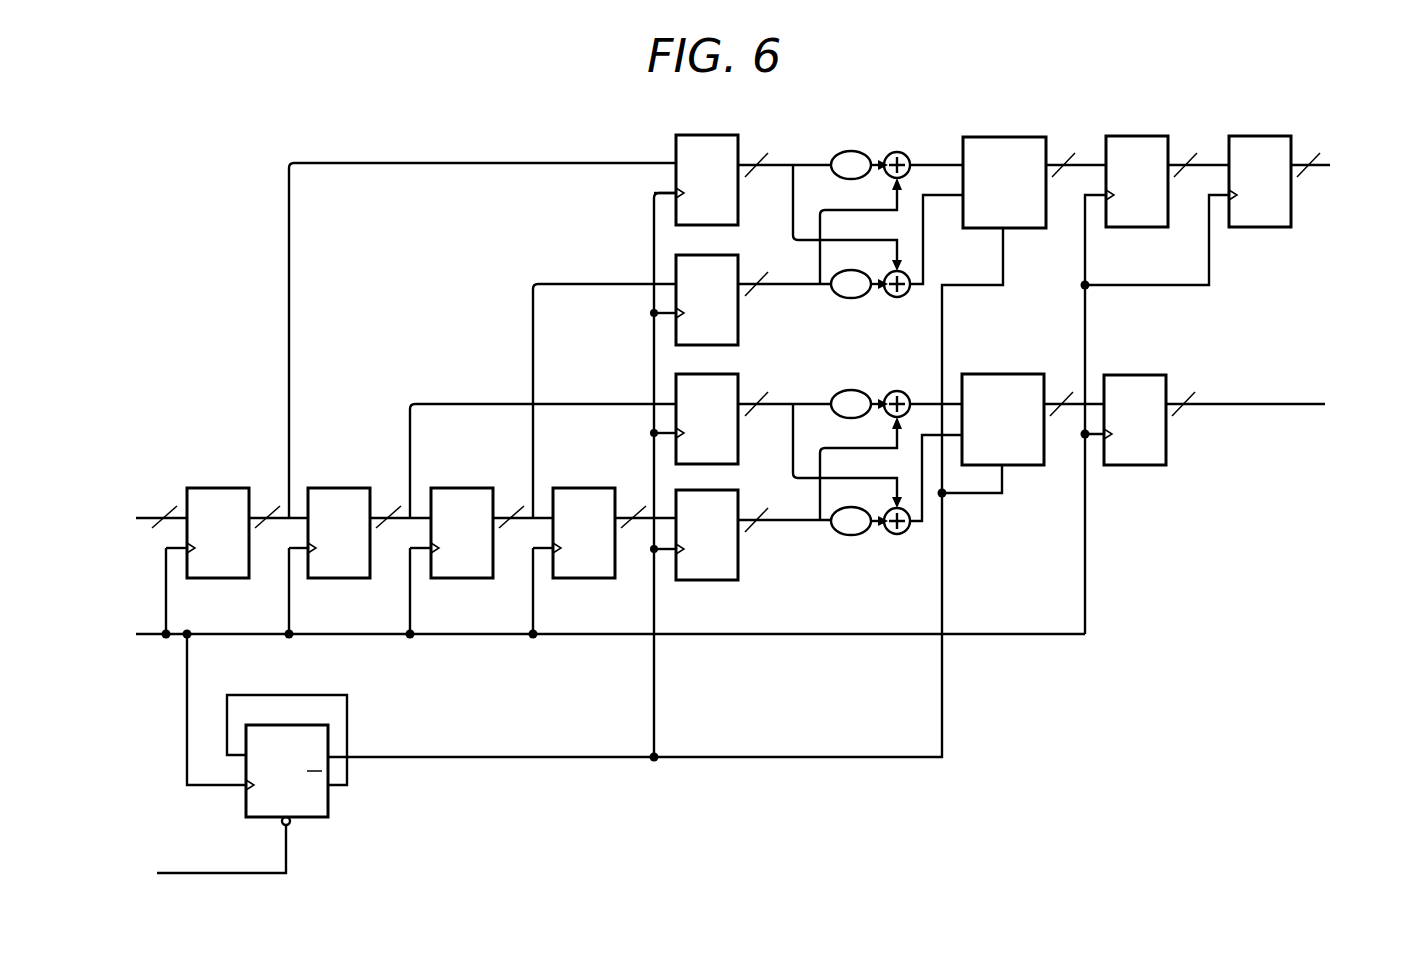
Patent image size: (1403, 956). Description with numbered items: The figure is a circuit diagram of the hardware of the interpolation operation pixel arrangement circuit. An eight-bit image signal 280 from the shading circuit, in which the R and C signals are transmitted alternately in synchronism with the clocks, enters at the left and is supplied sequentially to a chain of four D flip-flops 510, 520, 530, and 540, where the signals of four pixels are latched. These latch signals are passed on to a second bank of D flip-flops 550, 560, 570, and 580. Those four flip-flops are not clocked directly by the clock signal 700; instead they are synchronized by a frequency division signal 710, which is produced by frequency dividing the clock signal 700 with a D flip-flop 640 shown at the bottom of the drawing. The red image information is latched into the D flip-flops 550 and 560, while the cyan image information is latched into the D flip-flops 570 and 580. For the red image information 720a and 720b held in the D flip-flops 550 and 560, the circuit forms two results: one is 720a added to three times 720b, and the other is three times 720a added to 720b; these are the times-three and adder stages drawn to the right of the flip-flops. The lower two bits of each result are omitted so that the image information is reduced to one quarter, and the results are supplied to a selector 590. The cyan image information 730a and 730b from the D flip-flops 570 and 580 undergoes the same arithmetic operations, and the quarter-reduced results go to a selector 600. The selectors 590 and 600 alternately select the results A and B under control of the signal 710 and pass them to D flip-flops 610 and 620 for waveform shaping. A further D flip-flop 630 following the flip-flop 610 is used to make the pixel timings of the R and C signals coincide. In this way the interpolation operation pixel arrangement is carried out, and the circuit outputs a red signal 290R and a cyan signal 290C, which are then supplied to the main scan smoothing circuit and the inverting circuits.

The image signal 280 is at (150, 504).
The D flip-flop 510 is at (246, 488).
The D flip-flop 520 is at (366, 488).
The D flip-flop 530 is at (489, 488).
The D flip-flop 540 is at (609, 488).
The D flip-flop 550 is at (738, 212).
The D flip-flop 560 is at (738, 331).
The D flip-flop 570 is at (738, 449).
The D flip-flop 580 is at (738, 567).
The selector 590 is at (1038, 228).
The selector 600 is at (1038, 374).
The D flip-flop 610 is at (1161, 228).
The D flip-flop 620 is at (1161, 374).
The D flip-flop 630 is at (1283, 228).
The D flip-flop 640 is at (328, 803).
The clock signal 700 is at (150, 633).
The frequency division signal 710 is at (486, 757).
The red image information 720b is at (787, 164).
The red image information 720a is at (787, 284).
The latched data signal 730b is at (787, 402).
The latched data signal 730a is at (787, 521).
The red signal 290R is at (1318, 168).
The cyan signal 290C is at (1252, 404).